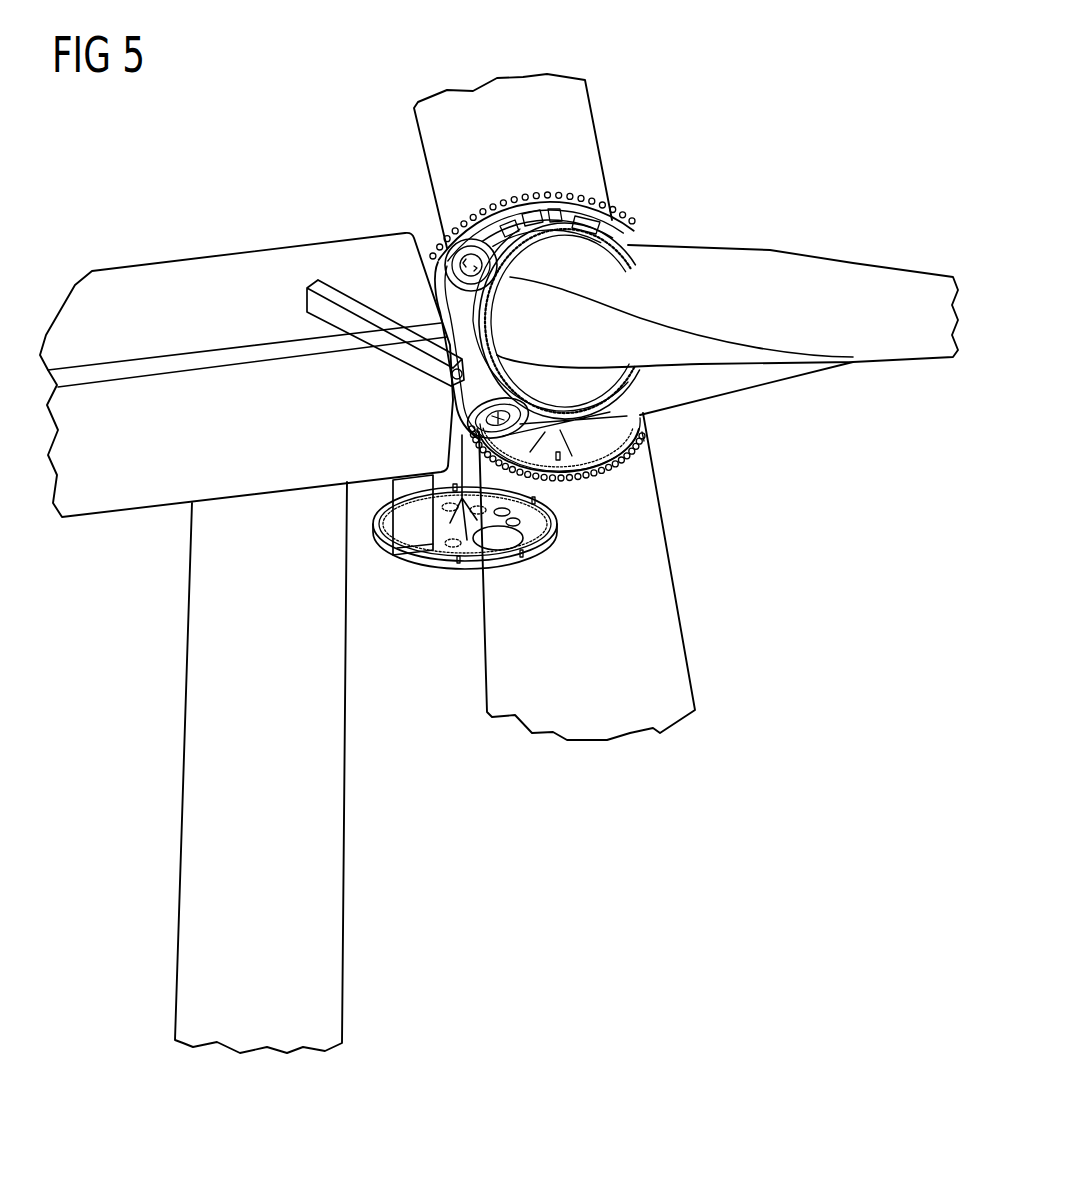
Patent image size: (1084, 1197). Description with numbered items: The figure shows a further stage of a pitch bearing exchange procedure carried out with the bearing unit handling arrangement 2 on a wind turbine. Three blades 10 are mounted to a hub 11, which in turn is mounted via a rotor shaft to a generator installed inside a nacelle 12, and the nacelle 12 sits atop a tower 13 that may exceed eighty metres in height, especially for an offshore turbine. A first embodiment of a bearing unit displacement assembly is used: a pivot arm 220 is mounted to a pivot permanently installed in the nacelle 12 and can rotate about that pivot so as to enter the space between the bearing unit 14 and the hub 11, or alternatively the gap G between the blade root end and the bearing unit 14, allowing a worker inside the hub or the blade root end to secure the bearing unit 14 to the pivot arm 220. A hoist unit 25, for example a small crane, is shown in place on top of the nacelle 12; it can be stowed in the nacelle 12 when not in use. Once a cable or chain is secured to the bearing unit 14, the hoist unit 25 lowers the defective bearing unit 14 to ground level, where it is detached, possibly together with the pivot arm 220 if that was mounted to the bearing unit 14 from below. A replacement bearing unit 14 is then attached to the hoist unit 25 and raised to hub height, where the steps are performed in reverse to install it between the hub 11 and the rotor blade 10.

The bearing unit handling arrangement 2 is at (792, 547).
The blade 10 is at (580, 112).
The hub 11 is at (575, 233).
The nacelle 12 is at (176, 268).
The tower 13 is at (197, 638).
The bearing unit 14 is at (440, 573).
The hoist unit 25 is at (357, 309).
The pivot arm 220 is at (412, 487).
The gap G is at (644, 441).